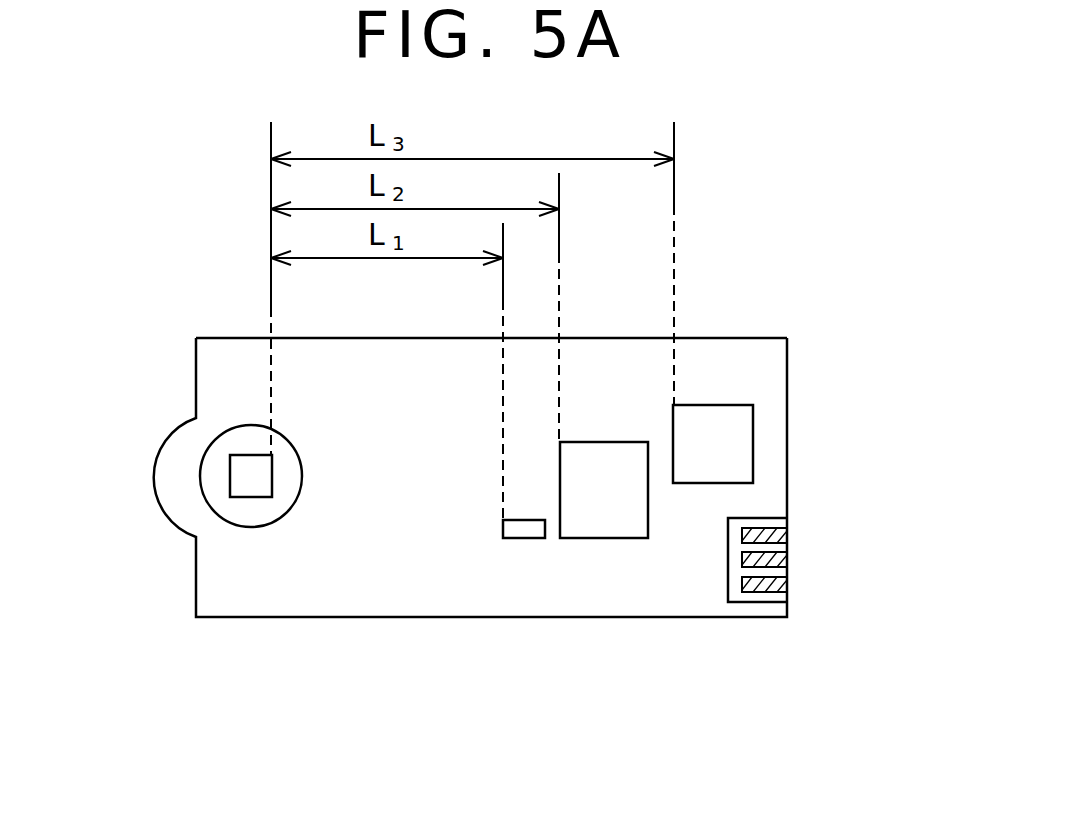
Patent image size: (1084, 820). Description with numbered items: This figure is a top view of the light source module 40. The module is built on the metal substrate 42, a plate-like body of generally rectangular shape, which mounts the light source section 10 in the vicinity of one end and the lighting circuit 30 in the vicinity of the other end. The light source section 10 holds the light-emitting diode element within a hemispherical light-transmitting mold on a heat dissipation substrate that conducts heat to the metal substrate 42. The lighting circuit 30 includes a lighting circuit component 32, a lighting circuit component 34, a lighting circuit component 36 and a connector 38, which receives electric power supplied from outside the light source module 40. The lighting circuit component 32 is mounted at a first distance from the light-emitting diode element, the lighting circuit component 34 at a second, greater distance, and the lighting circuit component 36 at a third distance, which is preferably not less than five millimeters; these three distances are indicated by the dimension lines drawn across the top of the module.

The light source section 10 is at (268, 523).
The lighting circuit 30 is at (645, 581).
The lighting circuit component 32 is at (523, 538).
The lighting circuit component 34 is at (602, 538).
The lighting circuit component 36 is at (713, 483).
The connector 38 is at (757, 601).
The light source module 40 is at (85, 334).
The metal substrate 42 is at (715, 353).